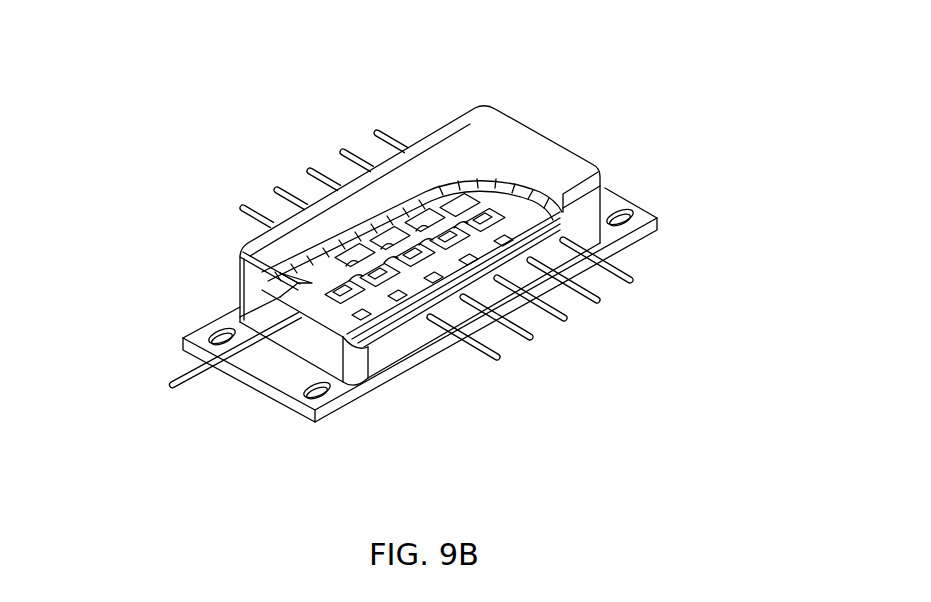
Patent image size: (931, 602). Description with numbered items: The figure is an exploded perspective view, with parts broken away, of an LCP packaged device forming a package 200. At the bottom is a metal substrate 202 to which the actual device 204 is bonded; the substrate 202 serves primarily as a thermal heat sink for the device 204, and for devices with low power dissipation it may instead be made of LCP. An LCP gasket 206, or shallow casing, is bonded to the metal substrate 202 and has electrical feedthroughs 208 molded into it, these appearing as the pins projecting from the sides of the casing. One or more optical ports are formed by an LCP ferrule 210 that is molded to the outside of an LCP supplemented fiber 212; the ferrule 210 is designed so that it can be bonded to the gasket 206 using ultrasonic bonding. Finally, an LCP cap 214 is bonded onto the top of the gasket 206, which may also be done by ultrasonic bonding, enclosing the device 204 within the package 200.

The package 200 is at (561, 105).
The metal substrate 202 is at (293, 351).
The device 204 is at (603, 287).
The LCP gasket 206 is at (408, 369).
The electrical feedthroughs 208 is at (652, 233).
The LCP ferrule 210 is at (280, 310).
The LCP supplemented fiber 212 is at (192, 368).
The LCP cap 214 is at (475, 162).